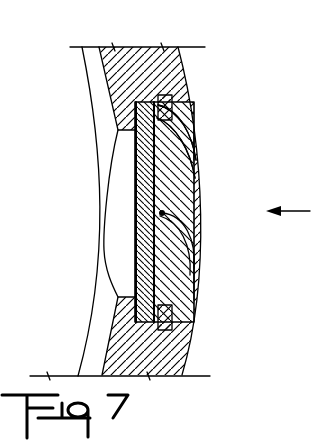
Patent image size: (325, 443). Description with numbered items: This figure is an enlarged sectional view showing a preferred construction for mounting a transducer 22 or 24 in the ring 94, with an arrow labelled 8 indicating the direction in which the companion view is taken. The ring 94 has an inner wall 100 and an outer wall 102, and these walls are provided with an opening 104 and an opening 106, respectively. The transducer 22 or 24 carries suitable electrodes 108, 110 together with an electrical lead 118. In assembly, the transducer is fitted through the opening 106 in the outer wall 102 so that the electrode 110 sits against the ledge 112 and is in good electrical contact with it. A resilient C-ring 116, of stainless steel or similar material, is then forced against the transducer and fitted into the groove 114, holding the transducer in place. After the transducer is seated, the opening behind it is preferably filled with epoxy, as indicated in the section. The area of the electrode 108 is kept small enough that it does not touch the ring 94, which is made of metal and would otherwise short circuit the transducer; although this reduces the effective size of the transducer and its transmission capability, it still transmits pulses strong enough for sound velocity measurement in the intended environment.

The ledge 112 is at (130, 47).
The ring 94 is at (184, 50).
The inner wall 100 is at (113, 90).
The opening 104 is at (110, 232).
The electrode 110 is at (136, 197).
The outer wall 102 is at (196, 126).
The groove 114 is at (176, 104).
The C-ring 116 is at (197, 142).
The transducer 22 is at (197, 177).
The transducer 24 is at (176, 141).
The electrode 108 is at (197, 203).
The opening 106 is at (196, 226).
The electrical lead 118 is at (194, 272).
The view direction arrow 8 is at (294, 213).